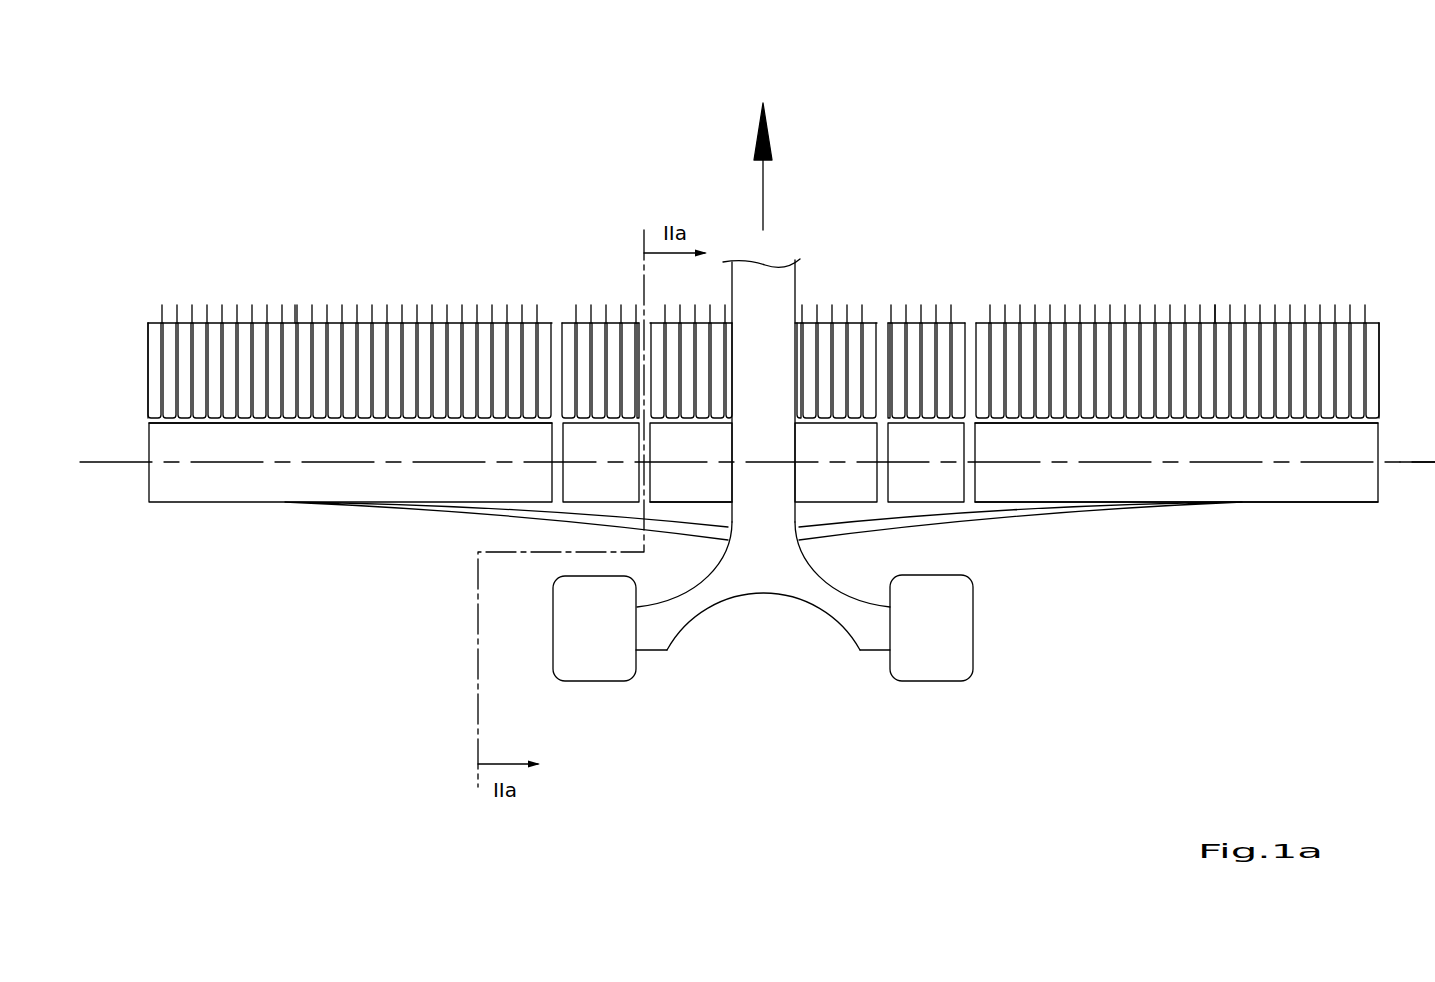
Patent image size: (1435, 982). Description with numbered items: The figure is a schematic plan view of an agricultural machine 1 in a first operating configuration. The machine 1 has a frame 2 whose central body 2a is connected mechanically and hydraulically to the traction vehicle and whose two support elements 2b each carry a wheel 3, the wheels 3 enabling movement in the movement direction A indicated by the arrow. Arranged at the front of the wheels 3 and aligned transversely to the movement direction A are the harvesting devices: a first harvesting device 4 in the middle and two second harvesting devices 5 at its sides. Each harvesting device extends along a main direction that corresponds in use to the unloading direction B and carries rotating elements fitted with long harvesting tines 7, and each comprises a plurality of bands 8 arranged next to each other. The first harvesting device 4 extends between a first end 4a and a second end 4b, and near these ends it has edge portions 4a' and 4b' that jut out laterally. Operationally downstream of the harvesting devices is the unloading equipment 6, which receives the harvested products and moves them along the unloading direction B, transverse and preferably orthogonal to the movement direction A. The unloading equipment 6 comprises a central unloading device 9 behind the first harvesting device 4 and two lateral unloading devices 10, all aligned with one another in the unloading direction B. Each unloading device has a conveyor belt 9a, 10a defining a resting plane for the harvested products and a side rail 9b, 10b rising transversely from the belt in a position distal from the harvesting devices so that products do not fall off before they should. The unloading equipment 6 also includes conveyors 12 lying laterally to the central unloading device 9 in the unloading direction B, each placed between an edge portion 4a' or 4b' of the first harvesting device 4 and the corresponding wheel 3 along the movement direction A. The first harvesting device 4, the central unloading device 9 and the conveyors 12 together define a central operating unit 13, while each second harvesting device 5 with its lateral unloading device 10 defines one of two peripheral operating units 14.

The agricultural machine 1 is at (1250, 170).
The frame 2 is at (782, 570).
The central body 2a is at (755, 300).
The support elements 2b is at (658, 628).
The wheels 3 is at (958, 633).
The first harvesting device 4 is at (583, 290).
The first end 4a is at (932, 307).
The edge portion 4a' is at (911, 288).
The second end 4b is at (555, 295).
The edge portion 4b' is at (615, 299).
The second harvesting devices 5 is at (305, 298).
The unloading equipment 6 is at (435, 483).
The harvesting tine 7 is at (237, 313).
The bands 8 is at (153, 377).
The central unloading device 9 is at (714, 488).
The conveyor belt 9a is at (822, 493).
The side rail 9b is at (690, 503).
The lateral unloading devices 10 is at (188, 488).
The conveyor belt 10a is at (480, 493).
The side rail 10b is at (1285, 504).
The conveyor 12 is at (580, 485).
The central operating unit 13 is at (840, 288).
The peripheral operating units 14 is at (385, 288).
The movement direction A is at (755, 147).
The unloading direction B is at (1429, 462).